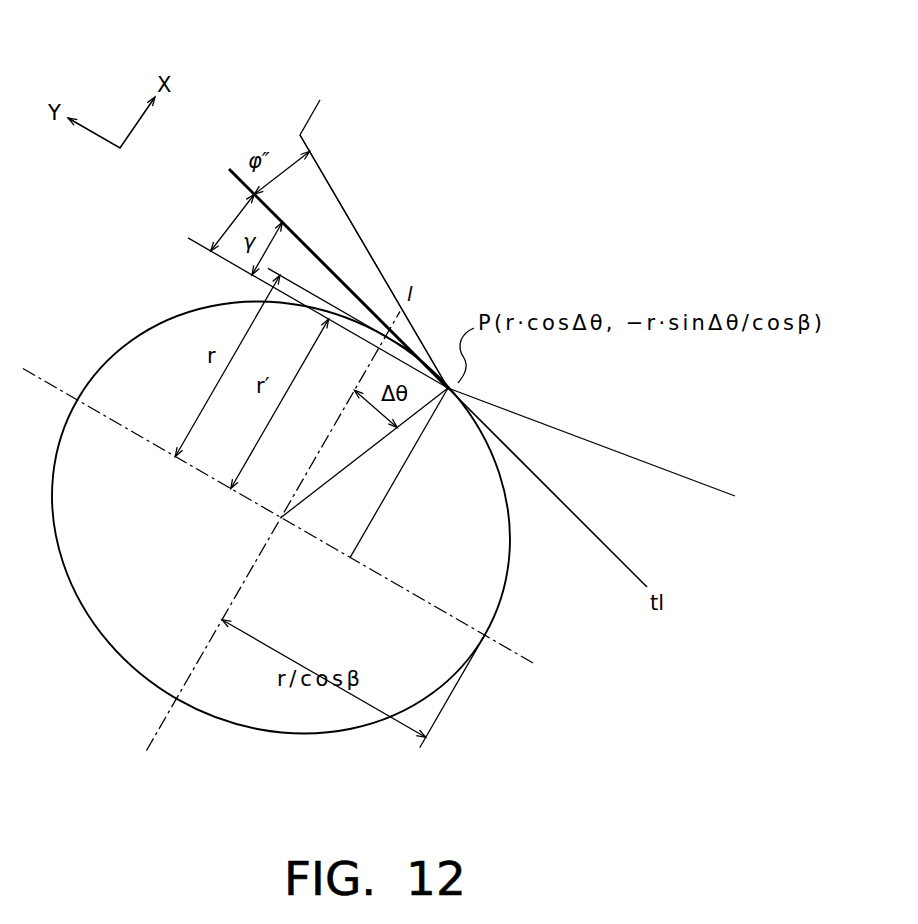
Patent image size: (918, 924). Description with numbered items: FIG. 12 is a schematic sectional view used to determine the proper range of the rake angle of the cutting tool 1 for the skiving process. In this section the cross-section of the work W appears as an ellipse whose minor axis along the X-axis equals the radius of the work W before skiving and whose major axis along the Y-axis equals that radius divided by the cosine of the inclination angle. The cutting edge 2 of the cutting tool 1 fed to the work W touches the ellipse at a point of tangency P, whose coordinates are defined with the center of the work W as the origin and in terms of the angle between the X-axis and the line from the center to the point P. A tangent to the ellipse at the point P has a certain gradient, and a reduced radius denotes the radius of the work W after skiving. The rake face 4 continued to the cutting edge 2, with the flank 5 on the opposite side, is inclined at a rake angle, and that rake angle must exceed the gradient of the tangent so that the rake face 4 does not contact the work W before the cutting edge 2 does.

The cutting tool 1 is at (300, 112).
The cutting edge 2 is at (462, 388).
The rake face 4 is at (337, 197).
The flank 5 is at (661, 470).
The work W is at (106, 362).